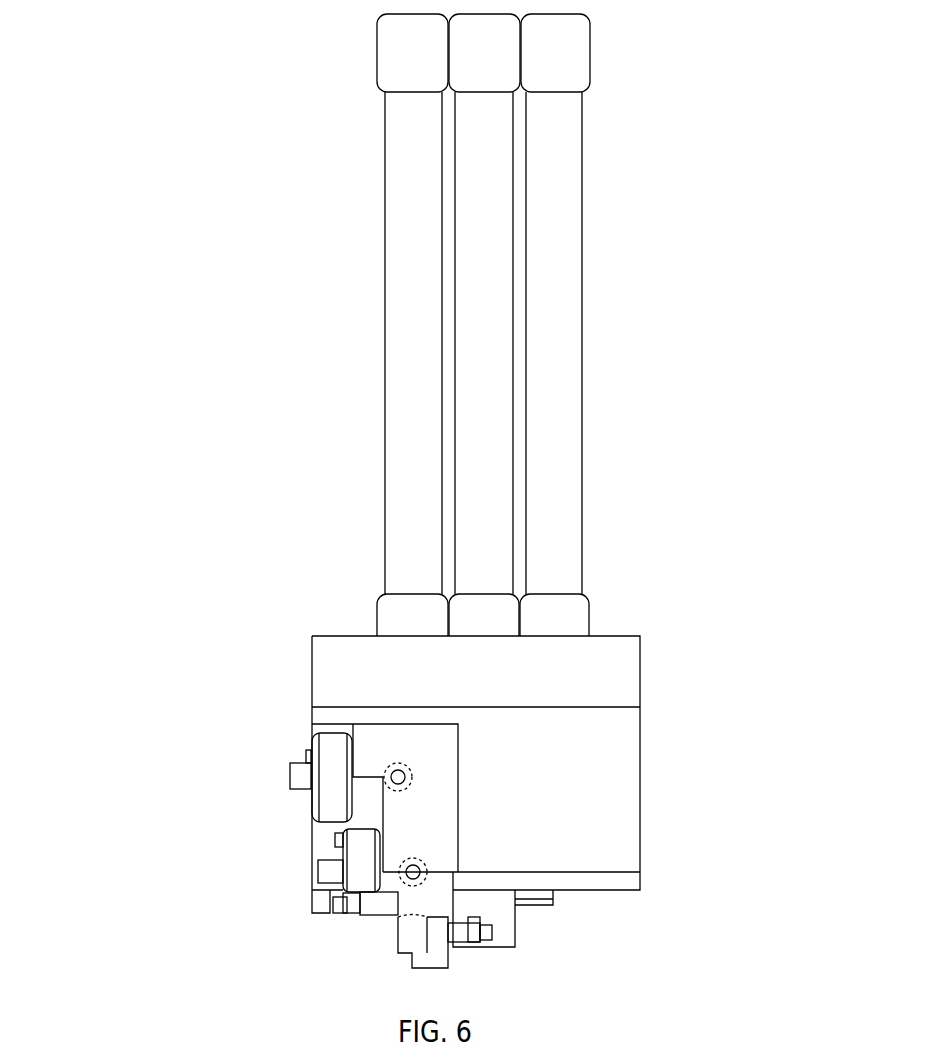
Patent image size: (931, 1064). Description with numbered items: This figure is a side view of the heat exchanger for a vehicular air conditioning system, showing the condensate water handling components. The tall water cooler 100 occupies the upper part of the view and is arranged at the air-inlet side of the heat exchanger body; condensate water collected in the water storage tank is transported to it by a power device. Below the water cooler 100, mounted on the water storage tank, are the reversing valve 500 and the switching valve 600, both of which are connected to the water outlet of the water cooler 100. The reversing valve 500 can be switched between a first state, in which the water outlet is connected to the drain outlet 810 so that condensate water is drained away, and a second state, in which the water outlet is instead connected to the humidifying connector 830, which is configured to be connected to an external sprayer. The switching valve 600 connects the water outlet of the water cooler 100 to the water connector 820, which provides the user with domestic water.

The water cooler 100 is at (563, 299).
The reversing valve 500 is at (355, 875).
The switching valve 600 is at (332, 773).
The drain outlet 810 is at (415, 933).
The water connector 820 is at (400, 776).
The humidifying connector 830 is at (413, 872).